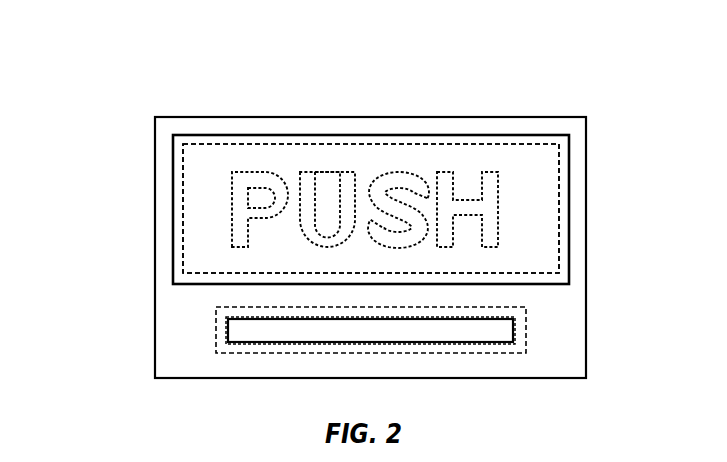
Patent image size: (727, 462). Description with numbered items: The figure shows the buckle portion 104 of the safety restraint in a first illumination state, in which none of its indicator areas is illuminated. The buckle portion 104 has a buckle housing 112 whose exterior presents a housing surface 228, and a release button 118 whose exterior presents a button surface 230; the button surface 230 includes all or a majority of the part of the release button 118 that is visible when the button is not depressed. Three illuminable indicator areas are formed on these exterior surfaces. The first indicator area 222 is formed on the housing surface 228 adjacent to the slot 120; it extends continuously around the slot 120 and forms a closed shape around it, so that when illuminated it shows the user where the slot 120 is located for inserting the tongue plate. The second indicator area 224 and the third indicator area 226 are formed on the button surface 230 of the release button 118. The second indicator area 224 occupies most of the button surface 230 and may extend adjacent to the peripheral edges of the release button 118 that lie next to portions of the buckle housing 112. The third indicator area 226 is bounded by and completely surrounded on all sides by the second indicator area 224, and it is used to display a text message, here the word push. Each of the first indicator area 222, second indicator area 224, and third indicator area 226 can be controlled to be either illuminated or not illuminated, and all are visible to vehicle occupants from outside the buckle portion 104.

The buckle portion 104 is at (346, 218).
The buckle housing 112 is at (587, 347).
The release button 118 is at (177, 229).
The slot 120 is at (240, 326).
The first indicator area 222 is at (220, 342).
The second indicator area 224 is at (222, 153).
The third indicator area 226 is at (401, 172).
The housing surface 228 is at (558, 323).
The button surface 230 is at (563, 219).